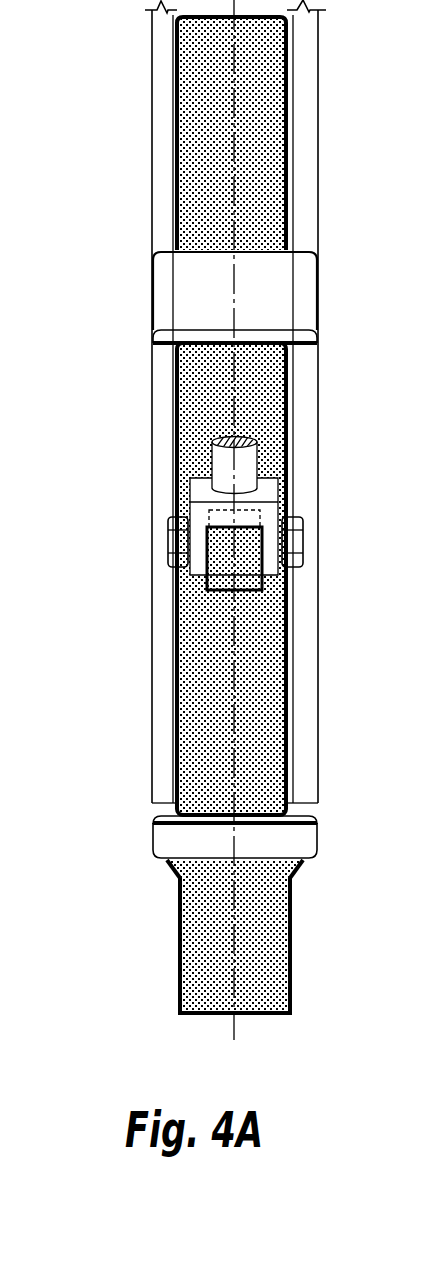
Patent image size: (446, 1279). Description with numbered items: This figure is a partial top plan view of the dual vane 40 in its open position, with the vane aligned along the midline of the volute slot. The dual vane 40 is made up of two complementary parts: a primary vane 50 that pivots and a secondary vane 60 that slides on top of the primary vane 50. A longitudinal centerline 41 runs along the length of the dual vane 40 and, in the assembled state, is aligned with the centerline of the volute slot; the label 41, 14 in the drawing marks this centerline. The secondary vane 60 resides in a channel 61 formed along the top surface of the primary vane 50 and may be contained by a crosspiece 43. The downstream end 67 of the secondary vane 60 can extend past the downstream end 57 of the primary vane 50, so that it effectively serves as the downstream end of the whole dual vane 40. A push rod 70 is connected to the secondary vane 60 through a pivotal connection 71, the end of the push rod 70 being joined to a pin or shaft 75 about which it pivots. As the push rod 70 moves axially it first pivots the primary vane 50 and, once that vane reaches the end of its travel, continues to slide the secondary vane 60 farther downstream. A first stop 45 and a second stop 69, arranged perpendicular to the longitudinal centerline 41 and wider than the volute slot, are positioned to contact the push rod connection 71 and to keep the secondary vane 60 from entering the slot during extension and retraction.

The dual vane 40 is at (216, 534).
The longitudinal centerline 41 is at (300, 133).
The rod 14 is at (236, 139).
The primary vane 50 is at (160, 157).
The crosspiece 43 is at (165, 300).
The channel 61 is at (184, 692).
The push rod 70 is at (218, 470).
The pin or shaft 75 is at (178, 547).
The pivotal connection 71 is at (208, 580).
The first stop 45 is at (222, 820).
The downstream end of the primary vane 57 is at (253, 862).
The second stop 69 is at (168, 864).
The secondary vane 60 is at (213, 964).
The downstream end of the secondary vane 67 is at (205, 1015).